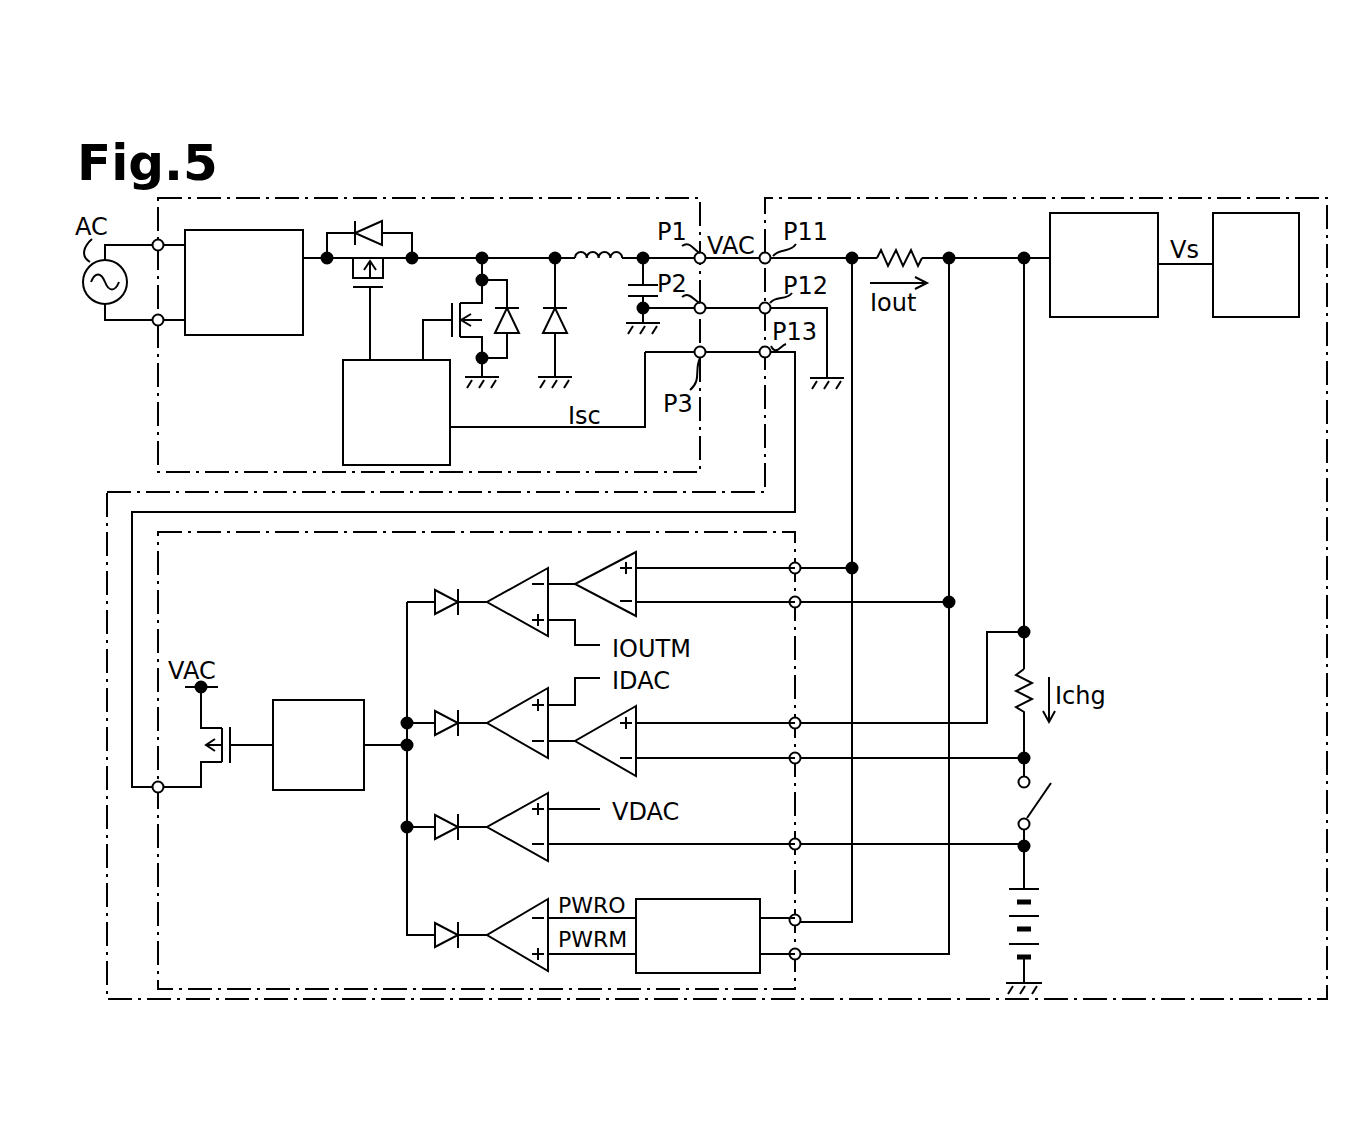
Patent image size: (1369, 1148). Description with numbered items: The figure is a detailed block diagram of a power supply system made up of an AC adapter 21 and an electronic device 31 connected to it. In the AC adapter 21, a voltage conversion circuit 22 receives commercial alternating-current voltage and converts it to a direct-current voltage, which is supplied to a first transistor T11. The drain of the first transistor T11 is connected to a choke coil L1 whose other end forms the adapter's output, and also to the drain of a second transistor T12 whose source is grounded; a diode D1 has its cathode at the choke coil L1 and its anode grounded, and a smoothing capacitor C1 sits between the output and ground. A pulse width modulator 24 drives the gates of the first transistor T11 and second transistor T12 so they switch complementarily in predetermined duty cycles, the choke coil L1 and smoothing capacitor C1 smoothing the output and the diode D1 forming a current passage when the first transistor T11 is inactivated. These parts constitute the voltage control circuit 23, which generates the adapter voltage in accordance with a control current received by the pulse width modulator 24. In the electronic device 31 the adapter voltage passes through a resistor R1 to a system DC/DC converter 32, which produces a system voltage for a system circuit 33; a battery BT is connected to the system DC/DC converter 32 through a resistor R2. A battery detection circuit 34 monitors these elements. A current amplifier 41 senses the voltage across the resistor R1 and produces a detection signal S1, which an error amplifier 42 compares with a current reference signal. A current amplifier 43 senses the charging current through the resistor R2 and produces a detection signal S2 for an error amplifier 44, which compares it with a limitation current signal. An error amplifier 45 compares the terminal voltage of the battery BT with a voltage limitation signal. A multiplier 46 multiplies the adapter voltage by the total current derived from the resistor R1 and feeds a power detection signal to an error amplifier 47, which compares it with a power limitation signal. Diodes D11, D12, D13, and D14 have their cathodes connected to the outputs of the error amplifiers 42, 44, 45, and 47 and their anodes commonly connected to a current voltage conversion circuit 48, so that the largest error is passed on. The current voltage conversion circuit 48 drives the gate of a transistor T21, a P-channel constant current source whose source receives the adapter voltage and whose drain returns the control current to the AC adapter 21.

The AC adapter 21 is at (500, 198).
The voltage conversion circuit 22 is at (217, 232).
The voltage control circuit 23 is at (319, 319).
The pulse width modulator 24 is at (452, 449).
The electronic device 31 is at (800, 198).
The system DC/DC converter 32 is at (1135, 317).
The system circuit 33 is at (1275, 317).
The battery detection circuit 34 is at (750, 531).
The current amplifier 41 is at (638, 560).
The error amplifier 42 is at (505, 580).
The current amplifier 43 is at (640, 718).
The error amplifier 44 is at (505, 700).
The error amplifier 45 is at (505, 806).
The multiplier 46 is at (735, 899).
The error amplifier 47 is at (505, 912).
The current voltage conversion circuit 48 is at (340, 700).
The first transistor T11 is at (355, 290).
The second transistor T12 is at (452, 312).
The transistor T21 is at (235, 733).
The diode D1 is at (568, 322).
The choke coil L1 is at (590, 246).
The smoothing capacitor C1 is at (630, 301).
The resistor R1 is at (900, 249).
The resistor R2 is at (1045, 660).
The battery BT is at (1040, 912).
The diode D11 is at (440, 590).
The diode D12 is at (440, 711).
The diode D13 is at (440, 815).
The diode D14 is at (440, 923).
The detection signal S1 is at (568, 571).
The detection signal S2 is at (568, 726).